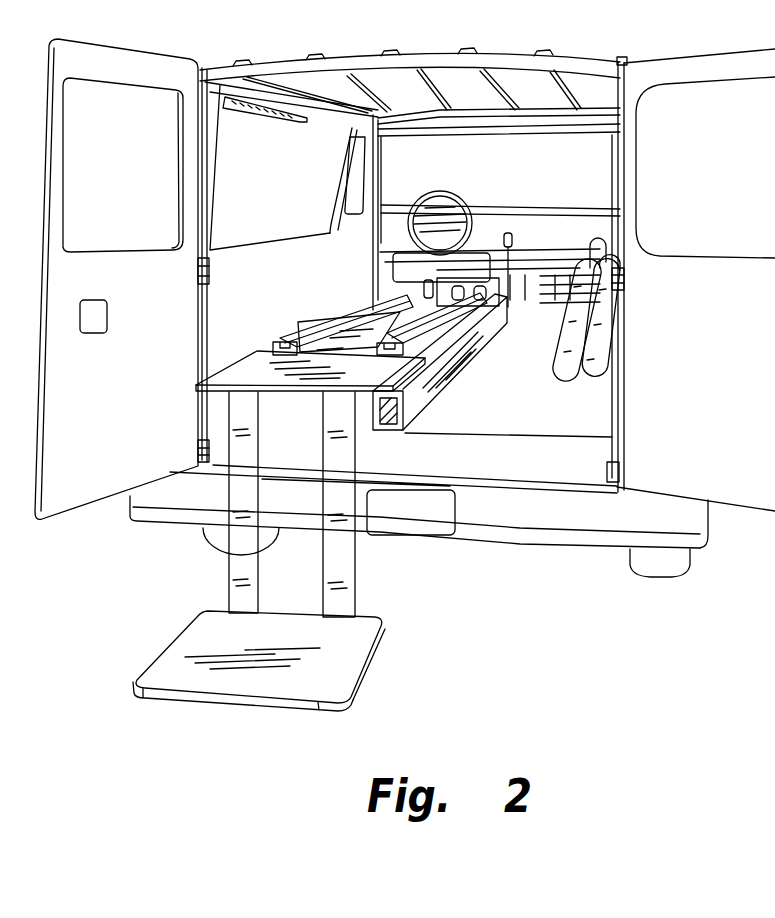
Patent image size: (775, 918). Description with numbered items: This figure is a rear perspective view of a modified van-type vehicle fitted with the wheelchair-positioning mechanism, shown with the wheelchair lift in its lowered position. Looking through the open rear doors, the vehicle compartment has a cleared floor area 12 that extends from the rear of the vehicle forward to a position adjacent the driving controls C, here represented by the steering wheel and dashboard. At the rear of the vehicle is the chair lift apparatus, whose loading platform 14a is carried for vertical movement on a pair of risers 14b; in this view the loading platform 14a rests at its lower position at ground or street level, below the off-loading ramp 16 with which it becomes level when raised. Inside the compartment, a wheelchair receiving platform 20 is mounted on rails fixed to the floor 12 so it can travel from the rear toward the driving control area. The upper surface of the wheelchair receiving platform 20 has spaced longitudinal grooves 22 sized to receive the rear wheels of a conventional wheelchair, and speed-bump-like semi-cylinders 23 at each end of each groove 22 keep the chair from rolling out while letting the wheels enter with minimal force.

The cleared floor area 12 is at (468, 424).
The loading platform 14a is at (366, 681).
The risers 14b is at (228, 577).
The off-loading ramp 16 is at (310, 371).
The wheelchair receiving platform 20 is at (360, 325).
The longitudinal grooves 22 is at (316, 318).
The semi-cylinders 23 is at (418, 357).
The driving controls C is at (440, 191).